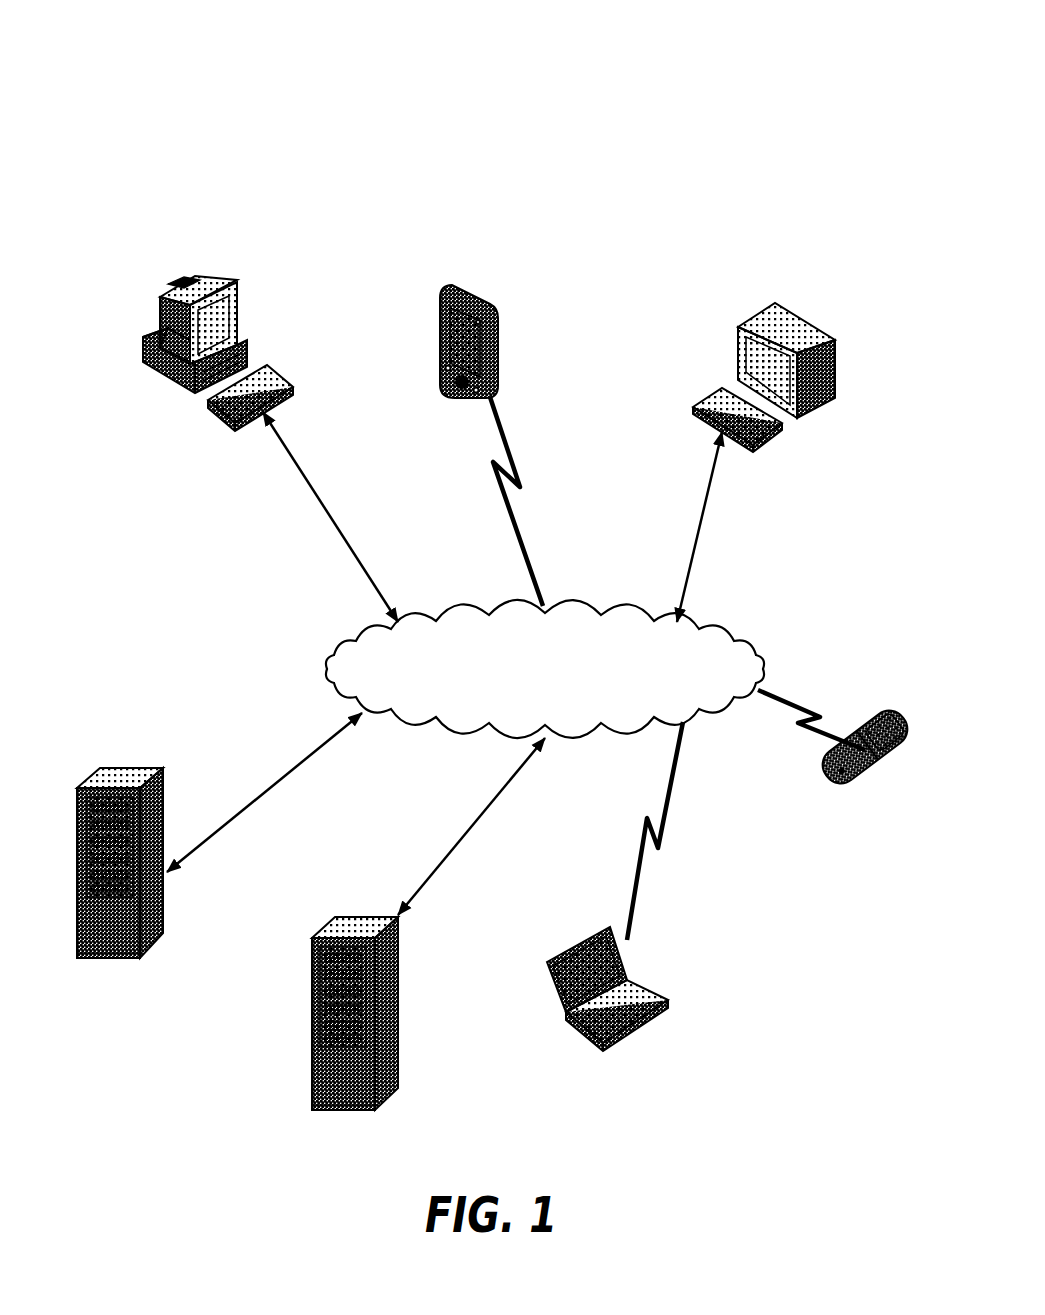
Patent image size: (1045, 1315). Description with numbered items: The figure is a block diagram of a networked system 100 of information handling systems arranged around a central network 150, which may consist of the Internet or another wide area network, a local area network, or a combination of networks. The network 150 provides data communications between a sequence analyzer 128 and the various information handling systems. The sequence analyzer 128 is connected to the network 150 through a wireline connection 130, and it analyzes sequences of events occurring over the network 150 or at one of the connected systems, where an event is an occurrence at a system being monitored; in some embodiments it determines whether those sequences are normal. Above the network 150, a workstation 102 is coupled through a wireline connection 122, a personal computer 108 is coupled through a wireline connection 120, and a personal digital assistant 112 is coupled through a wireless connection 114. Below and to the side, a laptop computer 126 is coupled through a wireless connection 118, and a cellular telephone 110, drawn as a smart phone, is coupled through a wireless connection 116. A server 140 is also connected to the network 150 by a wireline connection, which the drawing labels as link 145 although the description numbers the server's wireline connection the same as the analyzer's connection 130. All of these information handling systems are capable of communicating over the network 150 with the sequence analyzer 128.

The networked system 100 is at (114, 95).
The workstation 102 is at (805, 323).
The personal computer 108 is at (233, 280).
The cellular telephone 110 is at (887, 715).
The personal digital assistant 112 is at (485, 305).
The wireless connection 114 is at (527, 548).
The wireless connection 116 is at (795, 708).
The wireless connection 118 is at (665, 800).
The wireline connection 120 is at (333, 517).
The wireline connection 122 is at (703, 545).
The laptop computer 126 is at (648, 987).
The sequence analyzer 128 is at (400, 1045).
The wireline connection 130 is at (487, 805).
The server 140 is at (163, 913).
The network connection (server) 145 is at (291, 769).
The network 150 is at (747, 648).